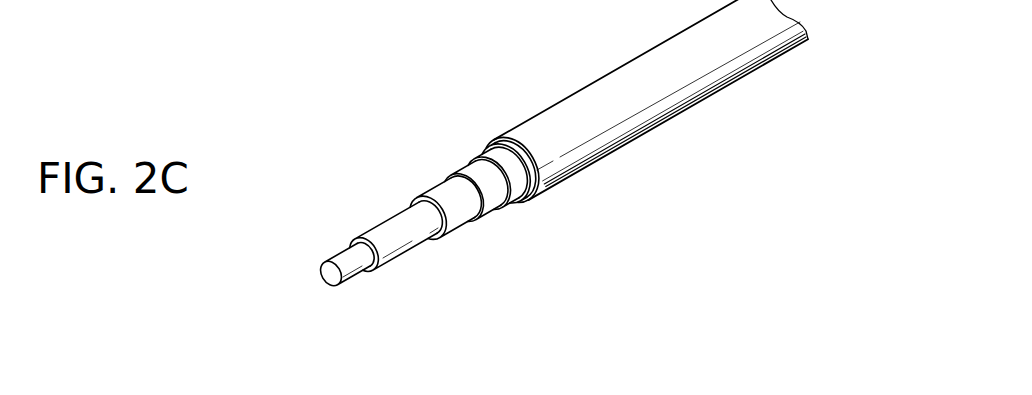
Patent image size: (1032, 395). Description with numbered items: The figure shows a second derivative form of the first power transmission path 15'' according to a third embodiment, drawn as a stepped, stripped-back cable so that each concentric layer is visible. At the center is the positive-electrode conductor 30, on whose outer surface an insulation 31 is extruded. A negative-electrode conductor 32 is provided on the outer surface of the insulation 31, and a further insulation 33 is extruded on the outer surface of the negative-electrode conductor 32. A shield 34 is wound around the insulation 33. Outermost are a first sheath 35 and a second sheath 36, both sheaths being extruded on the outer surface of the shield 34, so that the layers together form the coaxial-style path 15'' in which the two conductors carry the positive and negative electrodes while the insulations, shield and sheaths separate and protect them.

The first power transmission path 15'' is at (543, 167).
The positive-electrode conductor 30 is at (342, 262).
The insulation 31 is at (392, 260).
The negative-electrode conductor 32 is at (407, 214).
The insulation 33 is at (468, 224).
The shield 34 is at (493, 212).
The first sheath 35 is at (498, 163).
The second sheath 36 is at (603, 107).